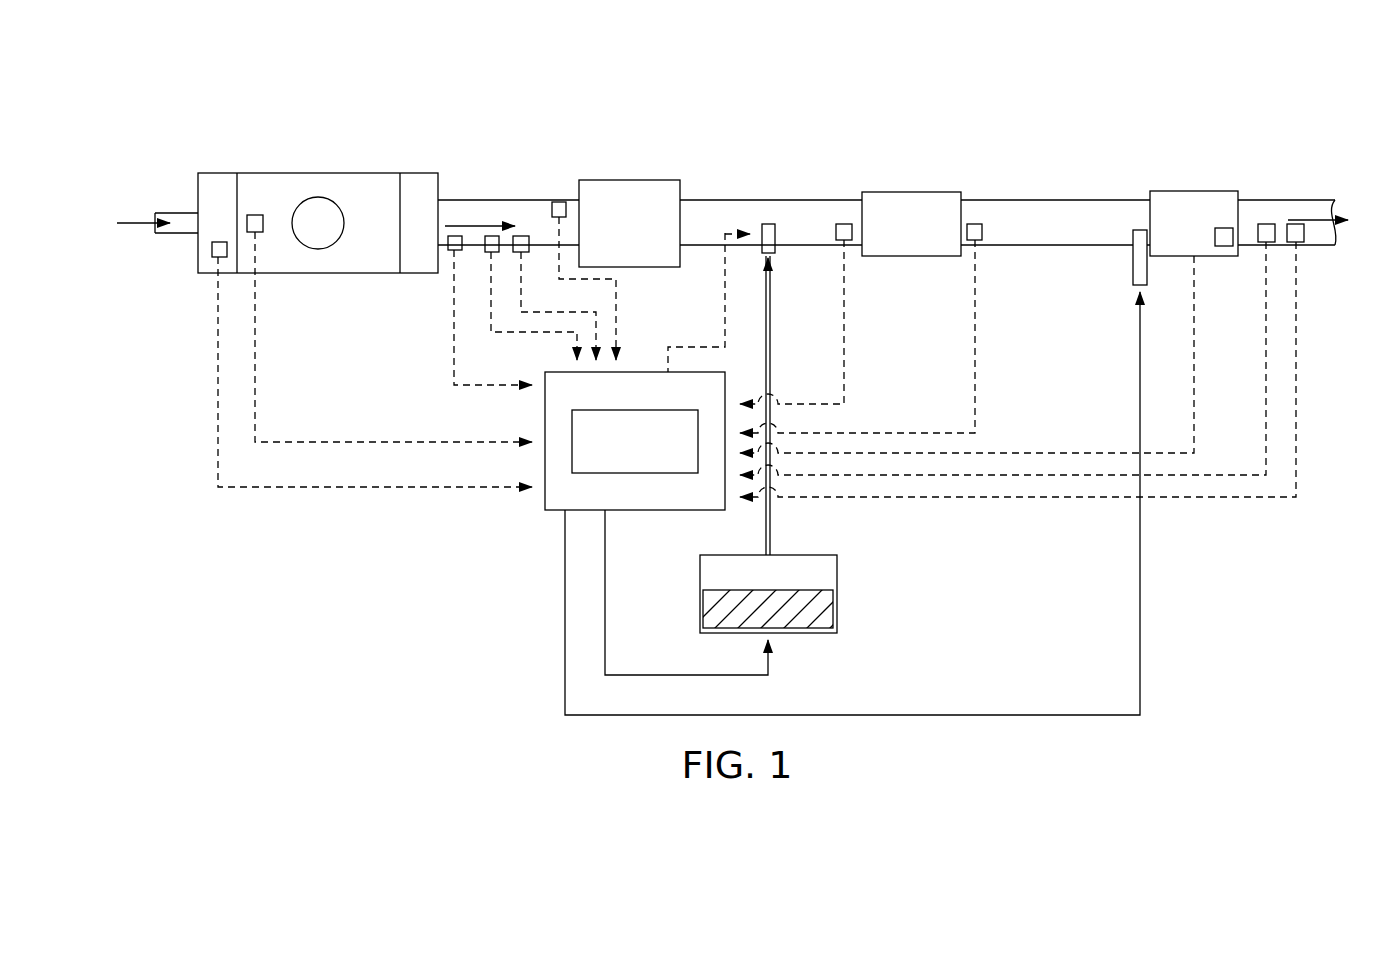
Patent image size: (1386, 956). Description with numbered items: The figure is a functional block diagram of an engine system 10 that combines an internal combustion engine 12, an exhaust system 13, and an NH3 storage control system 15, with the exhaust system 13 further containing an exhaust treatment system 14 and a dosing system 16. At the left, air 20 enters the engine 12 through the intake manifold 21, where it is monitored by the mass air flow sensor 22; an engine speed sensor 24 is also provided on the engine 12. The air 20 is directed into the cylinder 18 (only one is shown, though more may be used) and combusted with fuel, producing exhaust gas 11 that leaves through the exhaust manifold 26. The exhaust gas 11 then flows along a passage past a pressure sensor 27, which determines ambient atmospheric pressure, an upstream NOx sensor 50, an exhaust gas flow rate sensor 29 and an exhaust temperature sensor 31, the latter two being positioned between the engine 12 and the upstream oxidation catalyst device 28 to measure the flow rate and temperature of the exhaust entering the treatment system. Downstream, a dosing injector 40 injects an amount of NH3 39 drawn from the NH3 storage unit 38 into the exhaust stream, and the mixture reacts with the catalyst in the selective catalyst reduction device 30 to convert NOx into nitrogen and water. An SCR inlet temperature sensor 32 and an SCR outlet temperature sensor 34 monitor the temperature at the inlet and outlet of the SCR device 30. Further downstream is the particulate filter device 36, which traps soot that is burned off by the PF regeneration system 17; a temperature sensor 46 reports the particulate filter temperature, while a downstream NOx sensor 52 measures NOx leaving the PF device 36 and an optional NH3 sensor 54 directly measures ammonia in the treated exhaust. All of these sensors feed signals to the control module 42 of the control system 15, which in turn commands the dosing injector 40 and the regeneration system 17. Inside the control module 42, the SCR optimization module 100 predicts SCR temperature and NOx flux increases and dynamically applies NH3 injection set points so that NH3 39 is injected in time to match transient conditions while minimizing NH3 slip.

The engine system 10 is at (380, 74).
The exhaust gas 11 is at (478, 222).
The internal combustion engine 12 is at (295, 173).
The exhaust system 13 is at (545, 130).
The exhaust treatment system 14 is at (975, 97).
The NH3 storage control system 15 is at (500, 530).
The dosing system 16 is at (678, 553).
The PF regeneration system 17 is at (1112, 268).
The cylinder 18 is at (323, 200).
The air 20 is at (138, 218).
The intake manifold 21 is at (197, 205).
The mass air flow sensor 22 is at (212, 250).
The engine speed sensor 24 is at (252, 215).
The exhaust manifold 26 is at (418, 173).
The pressure sensor 27 is at (450, 252).
The upstream oxidation catalyst device 28 is at (630, 180).
The exhaust gas flow rate sensor 29 is at (517, 254).
The selective catalyst reduction device 30 is at (905, 192).
The exhaust temperature sensor 31 is at (558, 202).
The SCR inlet temperature sensor 32 is at (845, 224).
The SCR outlet temperature sensor 34 is at (975, 224).
The particulate filter device 36 is at (1195, 191).
The NH3 storage unit 38 is at (815, 555).
The NH3 supply 39 is at (823, 610).
The dosing injector 40 is at (768, 224).
The control module 42 is at (545, 400).
The temperature sensor 46 is at (1225, 228).
The upstream NOx sensor 50 is at (487, 254).
The downstream NOx sensor 52 is at (1262, 243).
The NH3 sensor 54 is at (1298, 243).
The SCR optimization module 100 is at (620, 453).